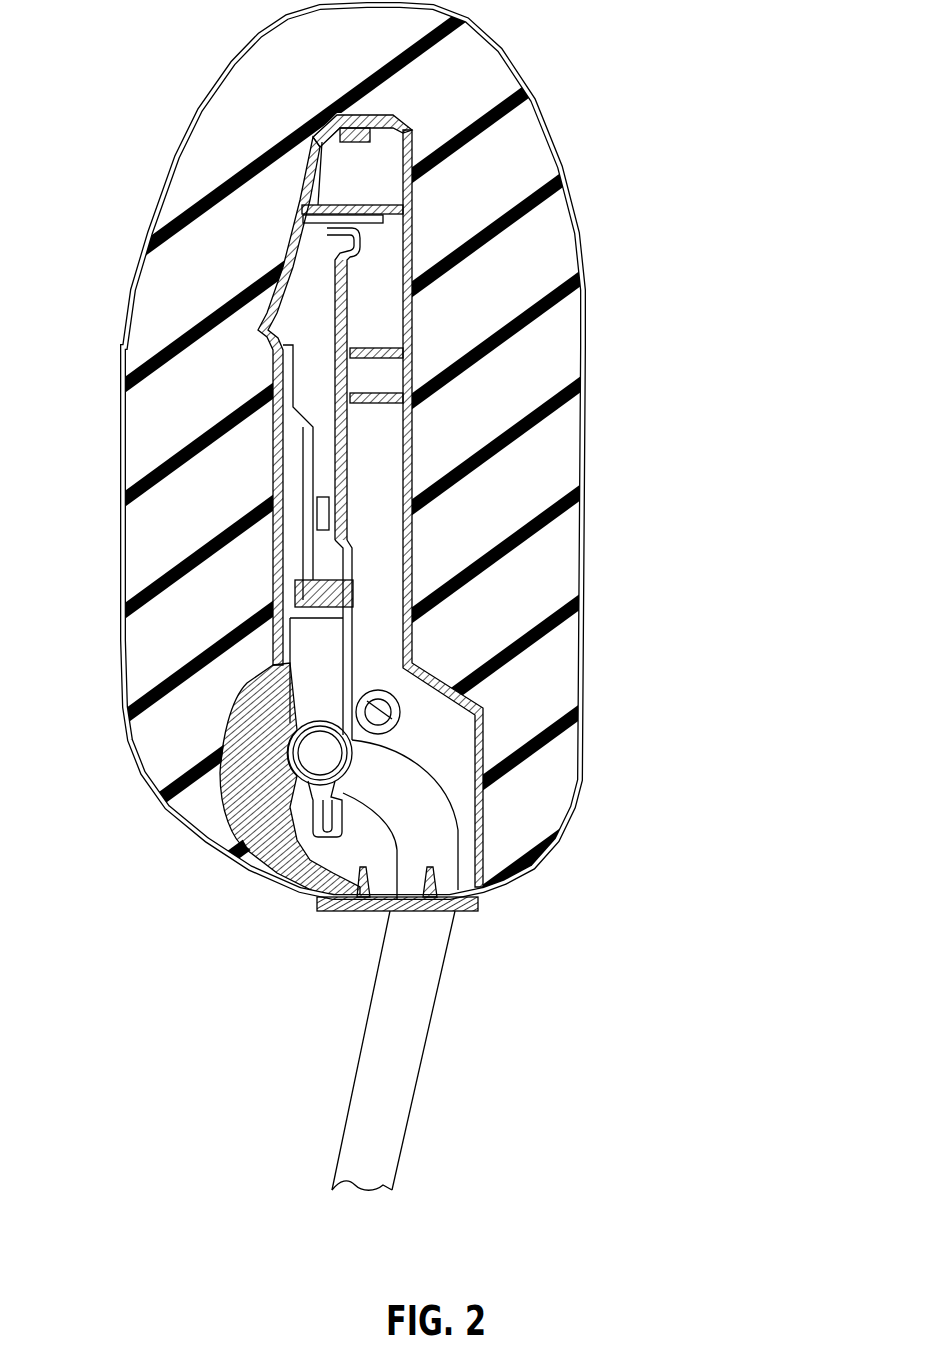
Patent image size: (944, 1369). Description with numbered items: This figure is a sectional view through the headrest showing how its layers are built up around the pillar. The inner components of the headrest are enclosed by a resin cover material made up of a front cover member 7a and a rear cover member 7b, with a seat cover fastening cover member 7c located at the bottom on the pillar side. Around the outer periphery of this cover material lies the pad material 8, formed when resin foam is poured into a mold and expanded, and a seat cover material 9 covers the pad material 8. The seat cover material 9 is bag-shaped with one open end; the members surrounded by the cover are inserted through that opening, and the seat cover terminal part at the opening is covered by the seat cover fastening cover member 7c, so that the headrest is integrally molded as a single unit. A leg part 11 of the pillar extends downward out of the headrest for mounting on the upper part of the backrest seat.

The front cover member 7a is at (273, 470).
The rear cover member 7b is at (415, 524).
The seat cover fastening cover member 7c is at (337, 910).
The pad material 8 is at (160, 765).
The seat cover material 9 is at (118, 672).
The leg part 11 is at (412, 1004).